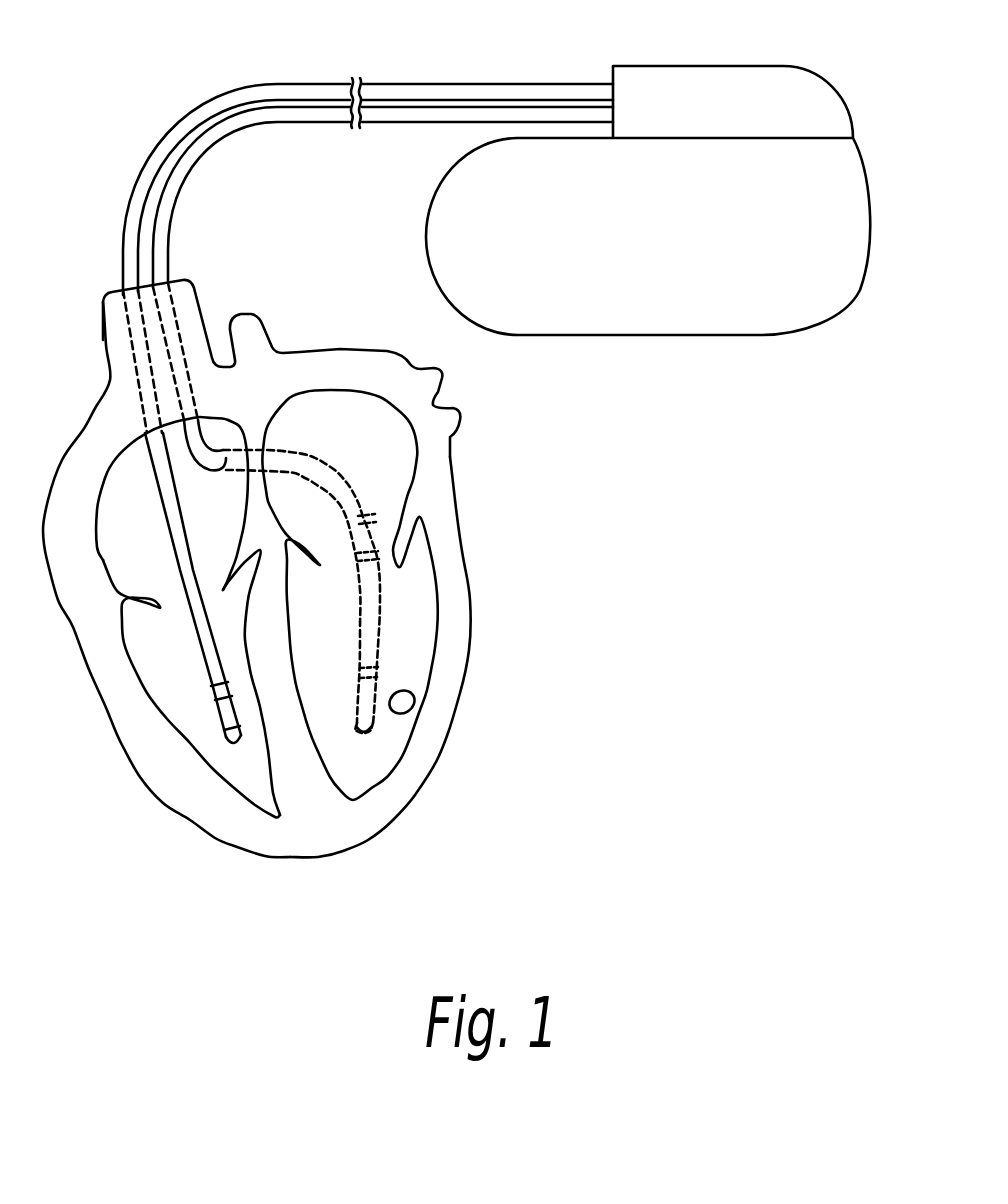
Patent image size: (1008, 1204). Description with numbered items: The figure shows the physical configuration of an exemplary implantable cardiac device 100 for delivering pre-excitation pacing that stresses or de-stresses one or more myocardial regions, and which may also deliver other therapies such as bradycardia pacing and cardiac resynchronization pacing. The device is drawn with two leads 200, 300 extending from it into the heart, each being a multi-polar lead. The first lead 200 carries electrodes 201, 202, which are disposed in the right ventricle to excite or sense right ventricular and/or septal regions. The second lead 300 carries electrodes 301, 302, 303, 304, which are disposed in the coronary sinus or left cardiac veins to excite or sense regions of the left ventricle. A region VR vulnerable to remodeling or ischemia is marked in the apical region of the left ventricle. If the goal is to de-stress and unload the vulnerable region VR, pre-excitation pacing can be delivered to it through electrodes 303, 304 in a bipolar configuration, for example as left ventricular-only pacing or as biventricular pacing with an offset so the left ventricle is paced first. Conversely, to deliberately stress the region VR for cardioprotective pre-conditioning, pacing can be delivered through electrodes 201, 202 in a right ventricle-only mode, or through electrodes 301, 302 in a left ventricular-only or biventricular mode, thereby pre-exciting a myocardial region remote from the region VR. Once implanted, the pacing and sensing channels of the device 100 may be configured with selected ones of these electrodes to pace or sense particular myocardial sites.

The implantable cardiac device 100 is at (825, 90).
The lead 200 is at (273, 90).
The electrode 201 is at (213, 690).
The electrode 202 is at (237, 747).
The lead 300 is at (317, 123).
The electrode 301 is at (367, 520).
The electrode 302 is at (377, 557).
The electrode 303 is at (373, 672).
The electrode 304 is at (363, 733).
The vulnerable region VR is at (410, 707).